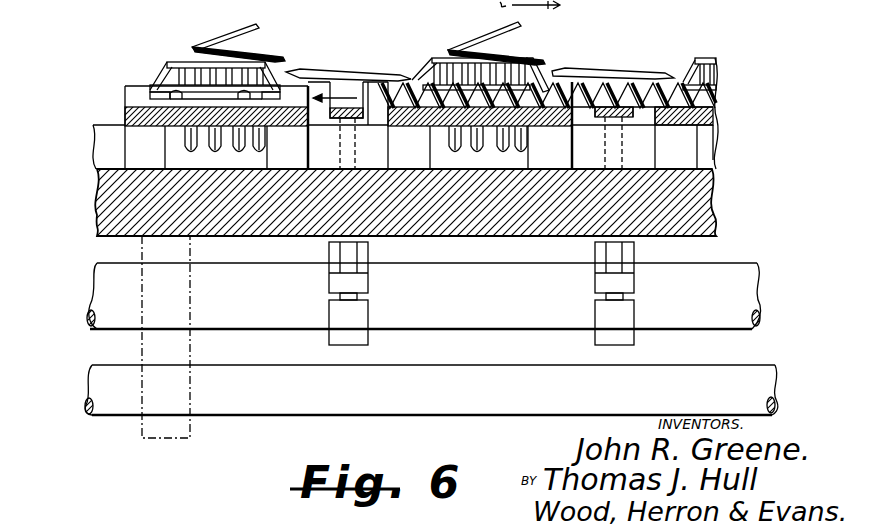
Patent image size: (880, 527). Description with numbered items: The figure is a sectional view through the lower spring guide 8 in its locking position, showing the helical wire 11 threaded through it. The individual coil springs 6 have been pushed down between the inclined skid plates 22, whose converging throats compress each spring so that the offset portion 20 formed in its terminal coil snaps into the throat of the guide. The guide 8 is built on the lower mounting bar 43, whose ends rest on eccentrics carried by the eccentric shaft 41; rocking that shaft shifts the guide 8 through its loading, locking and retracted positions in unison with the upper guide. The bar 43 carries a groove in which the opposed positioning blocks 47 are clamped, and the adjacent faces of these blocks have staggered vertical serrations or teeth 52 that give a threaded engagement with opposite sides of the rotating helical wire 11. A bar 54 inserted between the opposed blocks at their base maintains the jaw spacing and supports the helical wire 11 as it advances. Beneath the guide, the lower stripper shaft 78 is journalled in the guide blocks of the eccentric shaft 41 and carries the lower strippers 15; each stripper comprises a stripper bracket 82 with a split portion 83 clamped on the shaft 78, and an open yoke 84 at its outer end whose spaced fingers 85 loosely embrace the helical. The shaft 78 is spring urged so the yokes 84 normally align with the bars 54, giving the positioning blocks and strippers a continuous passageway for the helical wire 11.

The coil spring 6 is at (248, 29).
The lower spring guide 8 is at (88, 182).
The helical wire 11 is at (620, 70).
The lower stripper 15 is at (660, 68).
The offset portion 20 is at (203, 93).
The skid plate 22 is at (176, 62).
The eccentric shaft 41 is at (212, 397).
The lower mounting bar 43 is at (704, 208).
The block 47 is at (162, 70).
The serrations or teeth 52 is at (182, 140).
The bar 54 is at (550, 112).
The lower stripper shaft 78 is at (110, 280).
The stripper bracket 82 is at (622, 153).
The split portion 83 is at (360, 288).
The open yoke 84 is at (353, 92).
The finger 85 is at (310, 70).